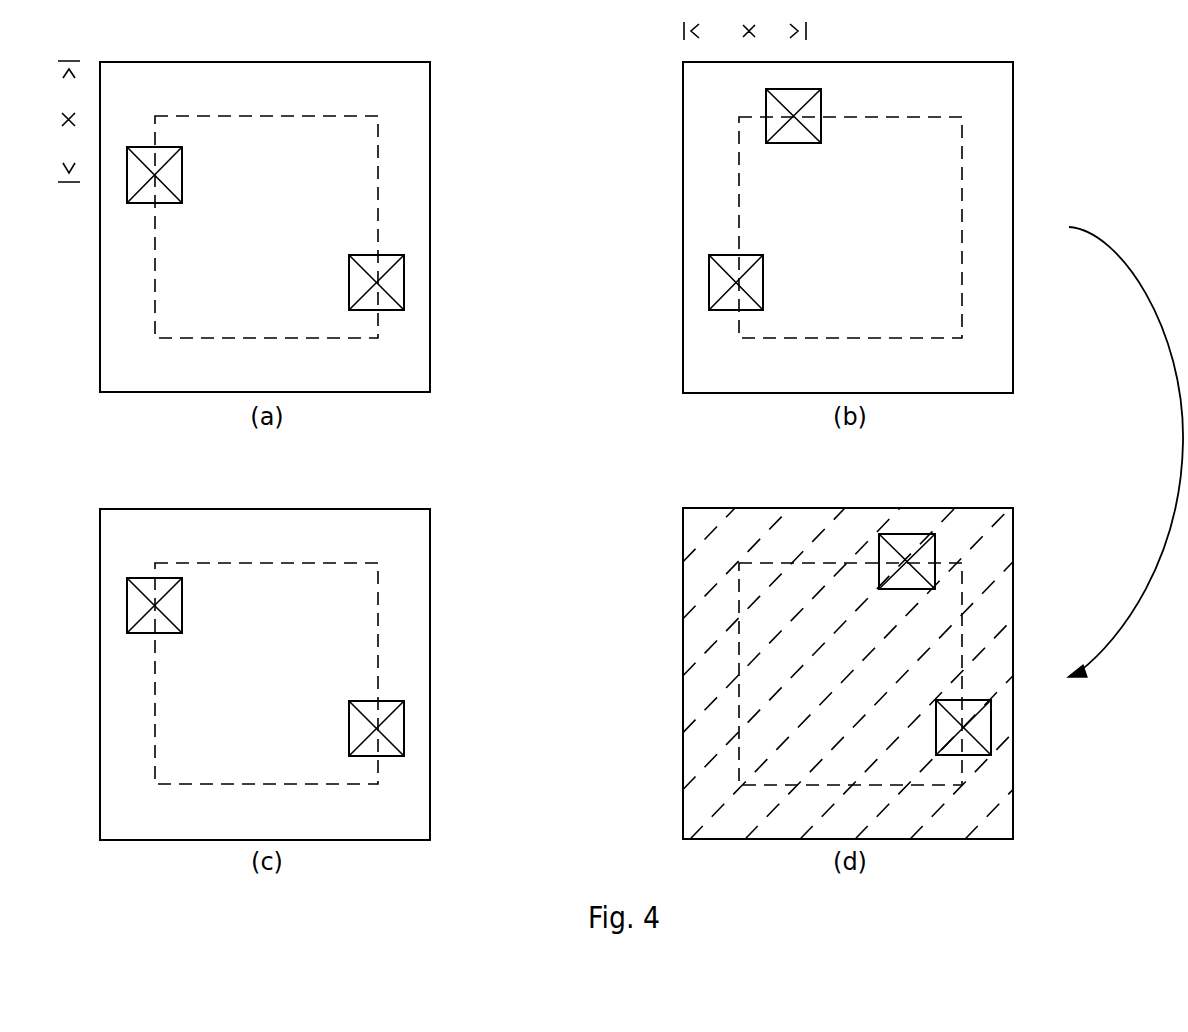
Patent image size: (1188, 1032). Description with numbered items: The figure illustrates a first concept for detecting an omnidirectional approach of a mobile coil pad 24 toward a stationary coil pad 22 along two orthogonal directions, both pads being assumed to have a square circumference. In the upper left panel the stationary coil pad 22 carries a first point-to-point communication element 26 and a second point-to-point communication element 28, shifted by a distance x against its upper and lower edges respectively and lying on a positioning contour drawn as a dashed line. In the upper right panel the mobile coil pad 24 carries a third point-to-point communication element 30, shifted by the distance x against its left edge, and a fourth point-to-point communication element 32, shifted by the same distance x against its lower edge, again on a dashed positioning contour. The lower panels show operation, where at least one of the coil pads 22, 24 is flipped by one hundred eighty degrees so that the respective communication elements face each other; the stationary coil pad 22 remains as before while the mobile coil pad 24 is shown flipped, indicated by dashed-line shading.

The stationary coil pad 22 is at (288, 61).
The mobile coil pad 24 is at (921, 61).
The first point-to-point communication element 26 is at (183, 180).
The second point-to-point communication element 28 is at (349, 283).
The third point-to-point communication element 30 is at (790, 144).
The fourth point-to-point communication element 32 is at (764, 285).